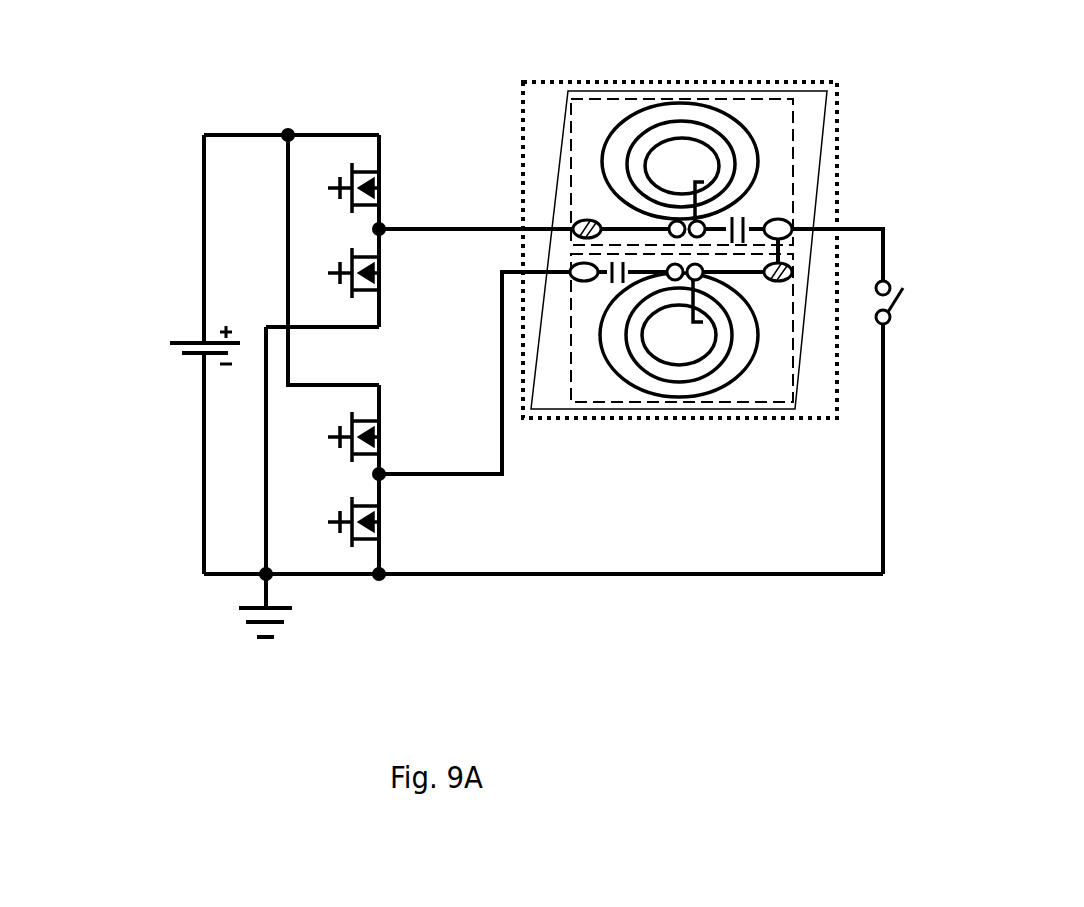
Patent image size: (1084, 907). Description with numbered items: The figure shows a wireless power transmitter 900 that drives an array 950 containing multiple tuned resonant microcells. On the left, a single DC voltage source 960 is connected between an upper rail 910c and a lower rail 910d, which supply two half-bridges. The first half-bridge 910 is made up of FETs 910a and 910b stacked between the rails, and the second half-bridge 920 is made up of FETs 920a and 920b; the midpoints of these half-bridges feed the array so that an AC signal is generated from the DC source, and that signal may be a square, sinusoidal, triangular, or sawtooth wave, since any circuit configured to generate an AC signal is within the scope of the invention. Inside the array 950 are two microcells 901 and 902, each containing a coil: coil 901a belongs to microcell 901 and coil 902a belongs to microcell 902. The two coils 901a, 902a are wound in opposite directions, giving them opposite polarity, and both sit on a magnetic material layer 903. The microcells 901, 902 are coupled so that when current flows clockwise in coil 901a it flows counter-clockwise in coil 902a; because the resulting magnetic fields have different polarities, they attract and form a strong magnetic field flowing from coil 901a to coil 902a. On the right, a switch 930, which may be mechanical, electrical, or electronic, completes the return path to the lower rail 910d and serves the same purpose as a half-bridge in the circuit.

The wireless power transmitter 900 is at (116, 124).
The half-bridge 910 is at (403, 212).
The FET 910a is at (380, 191).
The FET 910b is at (380, 285).
The upper rail 910c is at (204, 283).
The lower rail 910d is at (206, 465).
The half-bridge 920 is at (384, 479).
The FET 920a is at (385, 443).
The FET 920b is at (388, 522).
The DC voltage source 960 is at (180, 356).
The microcell 901 is at (587, 99).
The coil 901a is at (680, 105).
The microcell 902 is at (696, 403).
The coil 902a is at (616, 378).
The magnetic material layer 903 is at (757, 90).
The array 950 is at (830, 83).
The switch 930 is at (897, 285).